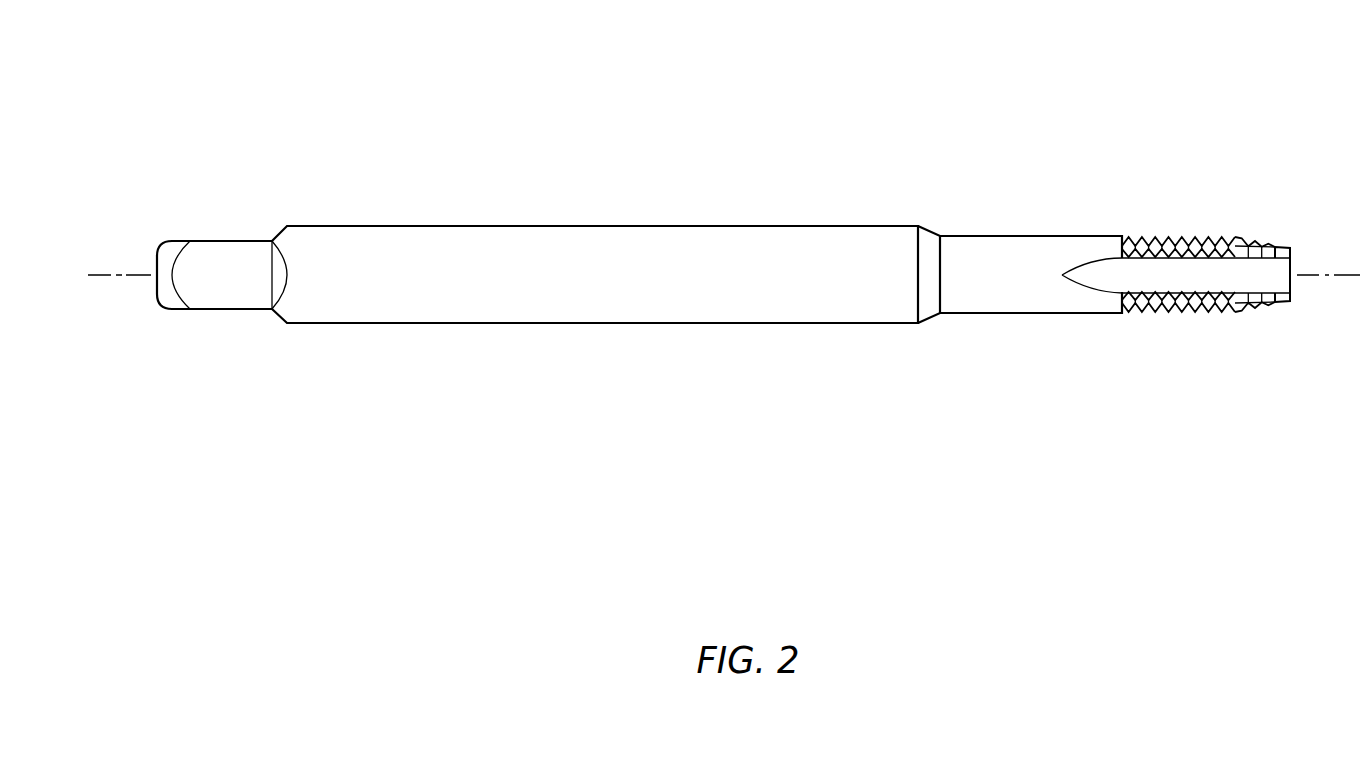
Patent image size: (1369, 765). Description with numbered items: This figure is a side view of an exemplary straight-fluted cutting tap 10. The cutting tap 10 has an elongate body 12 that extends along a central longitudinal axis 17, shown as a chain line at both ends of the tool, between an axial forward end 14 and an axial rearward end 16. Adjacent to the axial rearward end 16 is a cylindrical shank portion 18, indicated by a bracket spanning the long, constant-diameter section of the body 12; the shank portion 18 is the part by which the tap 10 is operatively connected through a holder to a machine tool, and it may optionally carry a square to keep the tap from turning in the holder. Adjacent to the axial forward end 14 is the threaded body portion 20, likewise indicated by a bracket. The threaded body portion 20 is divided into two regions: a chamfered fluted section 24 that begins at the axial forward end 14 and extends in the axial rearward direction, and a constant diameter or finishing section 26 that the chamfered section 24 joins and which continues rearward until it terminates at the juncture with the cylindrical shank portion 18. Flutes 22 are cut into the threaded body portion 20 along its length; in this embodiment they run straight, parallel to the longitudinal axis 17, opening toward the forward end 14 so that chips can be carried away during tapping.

The cutting tap 10 is at (424, 82).
The elongate body 12 is at (387, 324).
The axial forward end 14 is at (1292, 291).
The axial rearward end 16 is at (157, 257).
The longitudinal axis 17 is at (108, 278).
The cylindrical shank portion 18 is at (918, 212).
The threaded body portion 20 is at (1290, 222).
The flutes 22 is at (1272, 271).
The chamfered fluted section 24 is at (1274, 233).
The constant diameter section 26 is at (1172, 228).